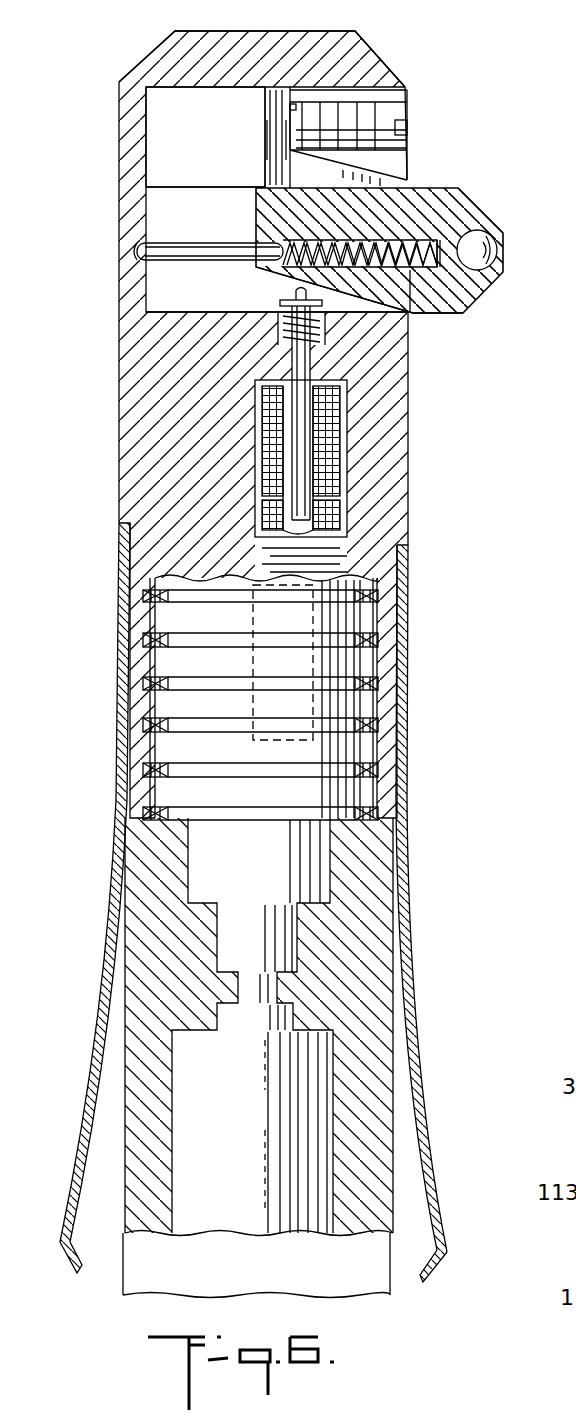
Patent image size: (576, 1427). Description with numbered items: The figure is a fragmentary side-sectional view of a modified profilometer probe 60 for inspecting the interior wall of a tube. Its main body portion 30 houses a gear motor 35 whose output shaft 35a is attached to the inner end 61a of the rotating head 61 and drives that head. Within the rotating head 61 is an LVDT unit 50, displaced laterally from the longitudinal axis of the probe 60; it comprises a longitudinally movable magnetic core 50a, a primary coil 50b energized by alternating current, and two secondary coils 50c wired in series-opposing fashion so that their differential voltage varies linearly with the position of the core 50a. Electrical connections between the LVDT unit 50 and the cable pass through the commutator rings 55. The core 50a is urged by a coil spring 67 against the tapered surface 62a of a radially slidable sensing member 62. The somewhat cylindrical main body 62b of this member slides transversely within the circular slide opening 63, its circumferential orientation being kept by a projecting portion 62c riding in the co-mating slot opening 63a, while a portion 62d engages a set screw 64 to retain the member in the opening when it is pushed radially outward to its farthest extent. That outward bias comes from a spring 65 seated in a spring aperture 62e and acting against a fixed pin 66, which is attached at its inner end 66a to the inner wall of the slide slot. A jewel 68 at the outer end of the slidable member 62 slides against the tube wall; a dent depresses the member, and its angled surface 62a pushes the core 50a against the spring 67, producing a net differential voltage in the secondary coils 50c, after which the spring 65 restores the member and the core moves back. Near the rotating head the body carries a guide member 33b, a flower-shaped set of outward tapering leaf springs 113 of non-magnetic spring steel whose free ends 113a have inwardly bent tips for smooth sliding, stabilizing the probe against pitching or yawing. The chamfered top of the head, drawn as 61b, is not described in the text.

The main body portion 30 is at (158, 1166).
The guide member 33b is at (412, 1083).
The gear motor 35 is at (275, 1121).
The output shaft 35a is at (267, 990).
The LVDT unit 50 is at (368, 476).
The magnetic core 50a is at (307, 368).
The primary coil 50b is at (330, 512).
The secondary coils 50c is at (315, 437).
The commutator rings 55 is at (447, 628).
The profilometer probe 60 is at (438, 753).
The rotating head 61 is at (130, 167).
The inner end 61a is at (295, 943).
The chamfered top 61b is at (165, 60).
The slidable sensing member 62 is at (409, 233).
The tapered surface 62a is at (368, 297).
The main body 62b is at (466, 210).
The projecting portion 62c is at (270, 137).
The portion 62d is at (280, 90).
The spring aperture 62e is at (342, 236).
The slide opening 63 is at (160, 212).
The slot opening 63a is at (160, 125).
The set screw 64 is at (377, 115).
The spring 65 is at (418, 236).
The fixed pin 66 is at (177, 260).
The inner end 66a is at (138, 255).
The coil spring 67 is at (278, 331).
The jewel 68 is at (487, 240).
The leaf springs 113 is at (432, 1178).
The outwardly projecting ends 113a is at (424, 1282).